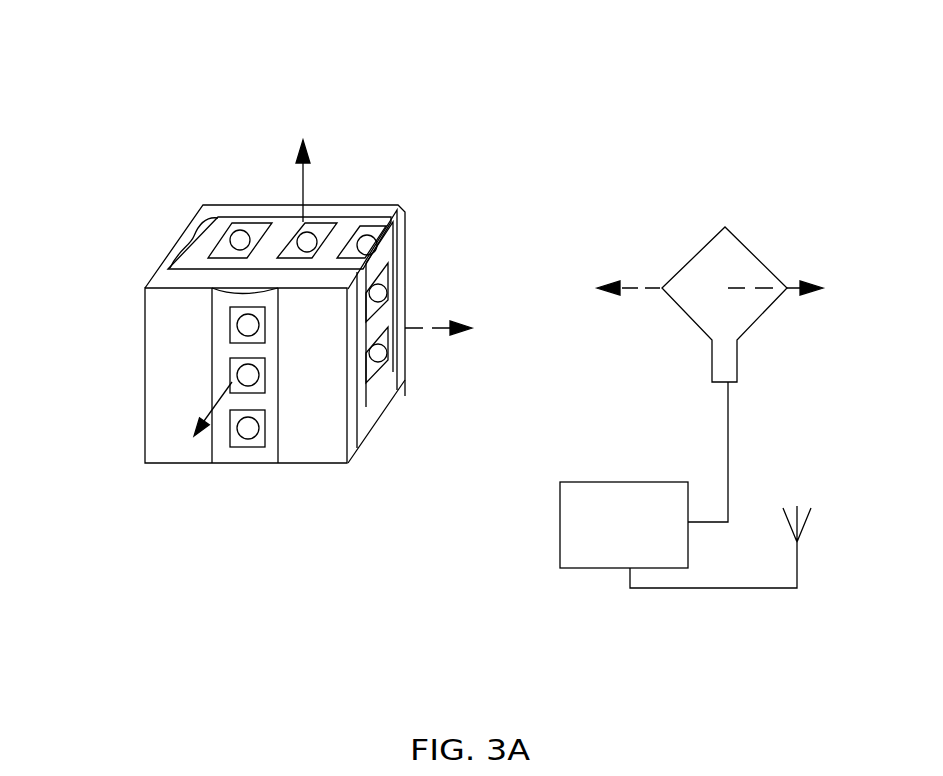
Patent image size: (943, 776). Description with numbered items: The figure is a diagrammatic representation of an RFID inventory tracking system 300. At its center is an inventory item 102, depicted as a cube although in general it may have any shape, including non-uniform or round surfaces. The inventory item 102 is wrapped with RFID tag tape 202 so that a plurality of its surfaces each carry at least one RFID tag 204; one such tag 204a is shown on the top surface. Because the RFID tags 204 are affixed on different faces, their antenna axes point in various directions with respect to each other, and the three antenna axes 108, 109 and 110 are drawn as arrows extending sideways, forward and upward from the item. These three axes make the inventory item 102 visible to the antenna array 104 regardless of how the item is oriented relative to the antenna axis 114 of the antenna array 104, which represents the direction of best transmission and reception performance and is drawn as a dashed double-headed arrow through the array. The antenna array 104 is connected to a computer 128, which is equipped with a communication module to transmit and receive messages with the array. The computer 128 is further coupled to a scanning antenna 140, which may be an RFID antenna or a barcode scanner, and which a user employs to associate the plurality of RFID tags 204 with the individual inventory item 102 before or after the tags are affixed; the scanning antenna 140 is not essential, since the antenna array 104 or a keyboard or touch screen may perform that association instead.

The RFID inventory tracking system 300 is at (425, 72).
The inventory item 102 is at (163, 463).
The RFID tag tape 202 is at (215, 220).
The RFID tag 204 is at (248, 227).
The RFID tag 204a is at (379, 244).
The antenna axis 110 is at (302, 183).
The antenna axis 108 is at (432, 328).
The antenna axis 109 is at (218, 403).
The antenna array 104 is at (710, 242).
The antenna axis 114 is at (660, 285).
The computer 128 is at (558, 520).
The scanning antenna 140 is at (800, 505).